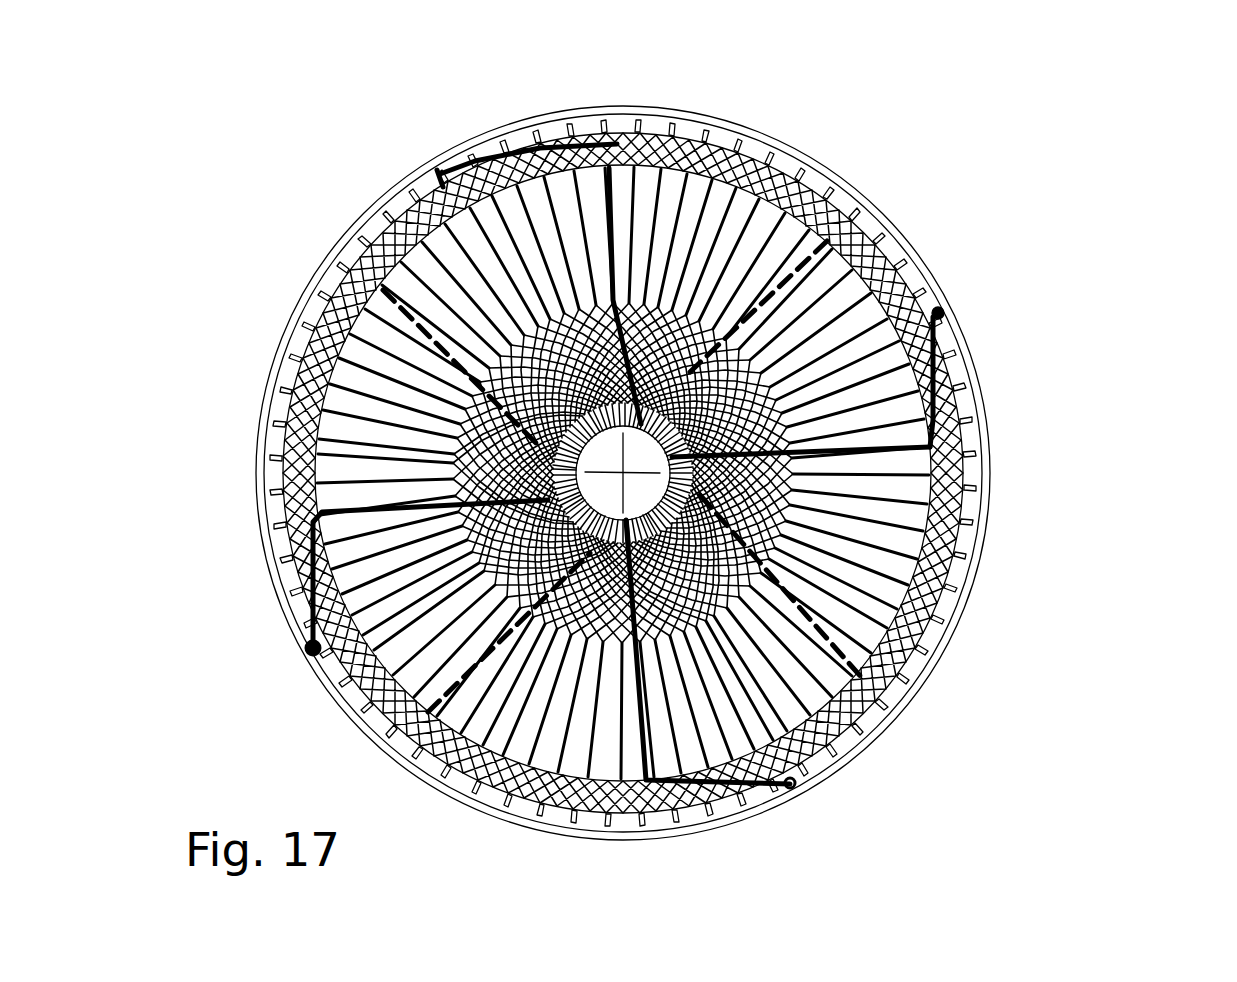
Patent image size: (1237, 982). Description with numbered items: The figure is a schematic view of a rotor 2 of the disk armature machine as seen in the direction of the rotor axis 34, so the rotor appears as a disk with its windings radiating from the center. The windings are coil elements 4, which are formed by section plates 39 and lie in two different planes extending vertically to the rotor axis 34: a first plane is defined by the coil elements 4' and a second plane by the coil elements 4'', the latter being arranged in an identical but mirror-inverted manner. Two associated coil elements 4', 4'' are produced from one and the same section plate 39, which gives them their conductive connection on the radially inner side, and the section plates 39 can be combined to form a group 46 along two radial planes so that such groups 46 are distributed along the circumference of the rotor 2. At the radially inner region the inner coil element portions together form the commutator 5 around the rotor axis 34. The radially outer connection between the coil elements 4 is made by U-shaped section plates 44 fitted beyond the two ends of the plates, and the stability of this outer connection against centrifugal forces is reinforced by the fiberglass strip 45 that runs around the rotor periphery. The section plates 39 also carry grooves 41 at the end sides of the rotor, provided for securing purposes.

The rotor 2 is at (916, 744).
The coil elements 4 is at (633, 227).
The coil element 4' is at (375, 368).
The coil element 4'' is at (785, 213).
The commutator 5 is at (360, 225).
The rotor axis 34 is at (623, 473).
The section plates 39 is at (790, 270).
The grooves 41 is at (472, 176).
The U-shaped section plates 44 is at (937, 308).
The fiberglass strip 45 is at (545, 112).
The group 46 is at (653, 723).